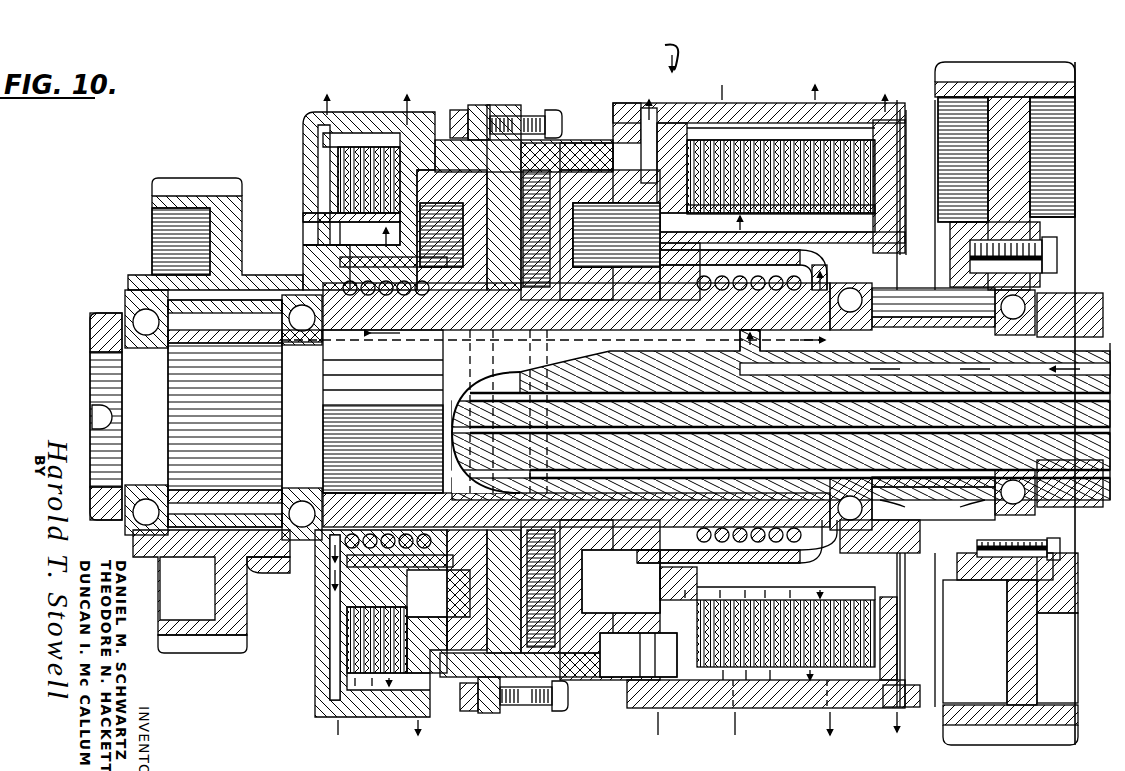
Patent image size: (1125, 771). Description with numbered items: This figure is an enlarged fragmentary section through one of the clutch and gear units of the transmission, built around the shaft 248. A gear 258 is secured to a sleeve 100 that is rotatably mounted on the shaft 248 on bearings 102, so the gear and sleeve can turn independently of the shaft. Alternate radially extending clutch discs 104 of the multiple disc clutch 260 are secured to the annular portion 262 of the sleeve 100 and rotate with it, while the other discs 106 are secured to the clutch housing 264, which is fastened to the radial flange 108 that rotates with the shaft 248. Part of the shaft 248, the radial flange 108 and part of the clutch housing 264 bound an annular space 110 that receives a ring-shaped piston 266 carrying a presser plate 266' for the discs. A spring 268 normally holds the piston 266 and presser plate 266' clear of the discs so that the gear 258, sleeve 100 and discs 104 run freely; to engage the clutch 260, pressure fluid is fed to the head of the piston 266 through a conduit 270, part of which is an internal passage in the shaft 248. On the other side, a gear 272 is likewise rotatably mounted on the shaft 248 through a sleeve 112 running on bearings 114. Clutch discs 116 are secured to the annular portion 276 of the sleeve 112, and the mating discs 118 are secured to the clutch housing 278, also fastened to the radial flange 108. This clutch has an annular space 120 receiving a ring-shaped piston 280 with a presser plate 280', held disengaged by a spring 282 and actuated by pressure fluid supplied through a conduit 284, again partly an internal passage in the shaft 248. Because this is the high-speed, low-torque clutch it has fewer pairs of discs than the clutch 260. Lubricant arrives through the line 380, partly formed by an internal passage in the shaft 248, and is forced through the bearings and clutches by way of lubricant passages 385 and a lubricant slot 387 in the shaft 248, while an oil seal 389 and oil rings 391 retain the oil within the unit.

The sleeve 100 is at (914, 252).
The bearings 102 is at (1040, 288).
The clutch discs 104 is at (795, 213).
The clutch discs 106 is at (772, 140).
The radial flange 108 is at (514, 90).
The annular space 110 is at (612, 125).
The sleeve 112 is at (298, 566).
The bearings 114 is at (298, 342).
The clutch discs 116 is at (320, 218).
The clutch discs 118 is at (380, 147).
The annular space 120 is at (582, 585).
The shaft 248 is at (100, 382).
The gear 258 is at (935, 90).
The multiple disc clutch 260 is at (656, 58).
The annular portion 262 is at (782, 225).
The clutch housing 264 is at (634, 103).
The ring-shaped piston 266 is at (595, 193).
The presser plate 266' is at (672, 128).
The spring 268 is at (764, 530).
The conduit 270 is at (634, 443).
The gear 272 is at (218, 652).
The annular portion 276 is at (320, 243).
The clutch housing 278 is at (350, 112).
The ring-shaped piston 280 is at (407, 632).
The presser plate 280' is at (378, 644).
The spring 282 is at (413, 548).
The conduit 284 is at (617, 407).
The lubricant line 380 is at (740, 377).
The lubricant passages 385 is at (933, 498).
The lubricant slot 387 is at (438, 345).
The oil seal 389 is at (140, 343).
The oil rings 391 is at (572, 520).